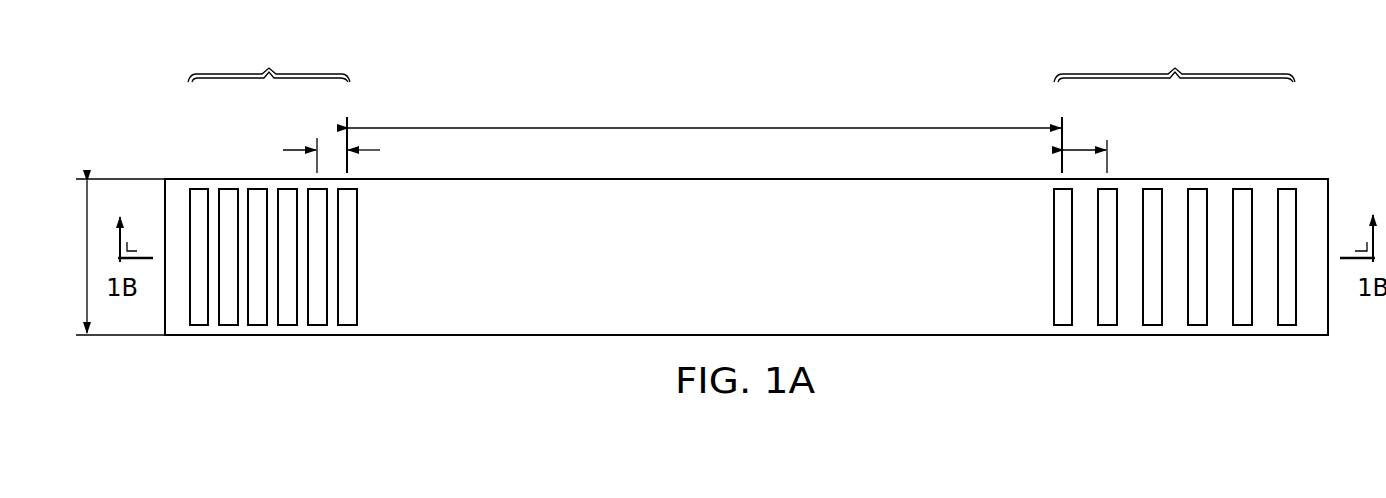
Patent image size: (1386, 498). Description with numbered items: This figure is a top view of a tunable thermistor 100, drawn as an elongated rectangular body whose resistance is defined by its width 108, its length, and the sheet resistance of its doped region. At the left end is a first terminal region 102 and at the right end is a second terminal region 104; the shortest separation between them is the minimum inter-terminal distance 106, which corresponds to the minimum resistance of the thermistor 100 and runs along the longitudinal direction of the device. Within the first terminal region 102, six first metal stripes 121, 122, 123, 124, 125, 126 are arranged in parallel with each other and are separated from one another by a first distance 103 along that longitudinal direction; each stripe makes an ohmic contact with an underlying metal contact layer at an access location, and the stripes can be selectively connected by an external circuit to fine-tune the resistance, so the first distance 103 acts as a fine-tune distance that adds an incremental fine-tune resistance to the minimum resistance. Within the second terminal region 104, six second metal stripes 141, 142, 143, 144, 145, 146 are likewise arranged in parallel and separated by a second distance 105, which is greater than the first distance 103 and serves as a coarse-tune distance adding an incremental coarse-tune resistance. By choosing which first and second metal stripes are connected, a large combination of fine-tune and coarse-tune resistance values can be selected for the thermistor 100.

The tunable thermistor 100 is at (495, 78).
The first terminal region 102 is at (269, 61).
The first distance 103 is at (300, 150).
The second terminal region 104 is at (1174, 61).
The second distance 105 is at (1083, 148).
The minimum inter-terminal distance 106 is at (705, 128).
The width 108 is at (87, 258).
The first metal stripe 121 is at (347, 258).
The first metal stripe 122 is at (318, 335).
The first metal stripe 123 is at (287, 335).
The first metal stripe 124 is at (252, 179).
The first metal stripe 125 is at (227, 335).
The first metal stripe 126 is at (197, 179).
The second metal stripe 141 is at (1054, 258).
The second metal stripe 142 is at (1105, 335).
The second metal stripe 143 is at (1155, 179).
The second metal stripe 144 is at (1197, 335).
The second metal stripe 145 is at (1245, 179).
The second metal stripe 146 is at (1285, 335).